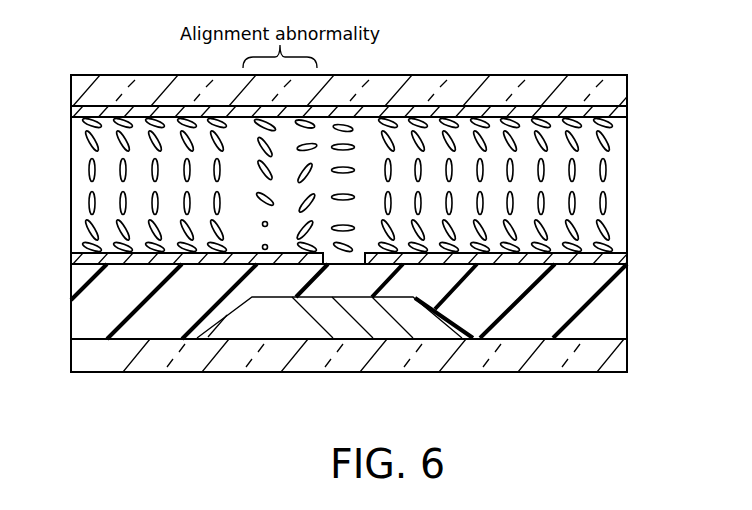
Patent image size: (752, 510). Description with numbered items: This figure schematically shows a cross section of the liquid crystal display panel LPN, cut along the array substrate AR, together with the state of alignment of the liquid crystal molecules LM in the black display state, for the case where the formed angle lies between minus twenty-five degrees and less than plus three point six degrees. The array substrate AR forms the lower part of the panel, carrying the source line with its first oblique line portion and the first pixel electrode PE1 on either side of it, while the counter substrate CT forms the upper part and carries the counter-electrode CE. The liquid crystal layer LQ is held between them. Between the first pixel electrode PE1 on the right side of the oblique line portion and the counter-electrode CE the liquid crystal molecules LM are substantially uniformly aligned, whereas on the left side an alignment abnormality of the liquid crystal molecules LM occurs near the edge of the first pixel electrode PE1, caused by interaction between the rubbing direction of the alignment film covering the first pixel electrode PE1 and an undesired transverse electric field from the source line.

The liquid crystal display panel LPN is at (672, 60).
The counter substrate CT is at (636, 90).
The counter-electrode CE is at (622, 110).
The liquid crystal molecules LM is at (606, 171).
The liquid crystal layer LQ is at (616, 216).
The first pixel electrode PE1 is at (82, 259).
The array substrate AR is at (641, 306).